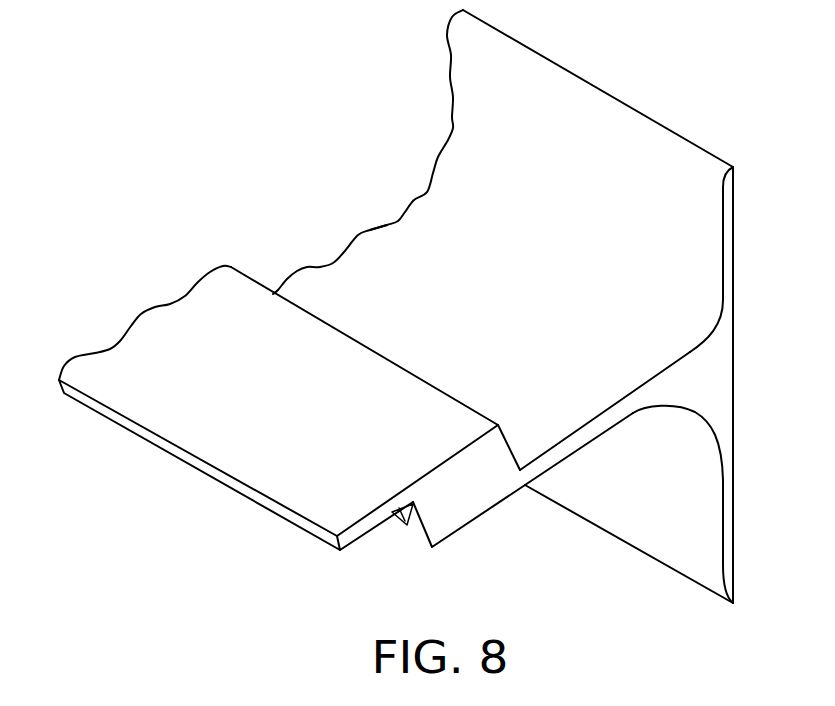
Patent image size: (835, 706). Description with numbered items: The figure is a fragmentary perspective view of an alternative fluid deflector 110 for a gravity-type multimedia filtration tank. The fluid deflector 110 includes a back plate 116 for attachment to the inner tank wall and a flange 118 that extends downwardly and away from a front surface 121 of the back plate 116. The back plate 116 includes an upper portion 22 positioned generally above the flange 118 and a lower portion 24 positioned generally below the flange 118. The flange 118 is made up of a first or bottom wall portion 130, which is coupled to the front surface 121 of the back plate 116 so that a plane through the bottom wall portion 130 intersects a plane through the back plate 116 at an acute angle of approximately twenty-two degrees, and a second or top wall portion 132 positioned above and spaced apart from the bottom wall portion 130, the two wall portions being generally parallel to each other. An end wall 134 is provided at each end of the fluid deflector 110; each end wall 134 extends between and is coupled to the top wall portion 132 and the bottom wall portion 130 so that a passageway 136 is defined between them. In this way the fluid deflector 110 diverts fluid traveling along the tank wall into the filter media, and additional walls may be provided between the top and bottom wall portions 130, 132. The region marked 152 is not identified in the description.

The fluid deflector 110 is at (248, 80).
The upper portion 22 is at (537, 92).
The lower portion 24 is at (728, 523).
The back plate 116 is at (750, 218).
The flange 118 is at (288, 245).
The front surface 121 is at (668, 176).
The bottom wall portion 130 is at (572, 442).
The top wall portion 132 is at (357, 530).
The end wall 134 is at (438, 518).
The passageway 136 is at (395, 523).
The panel edge portion 152 is at (387, 242).